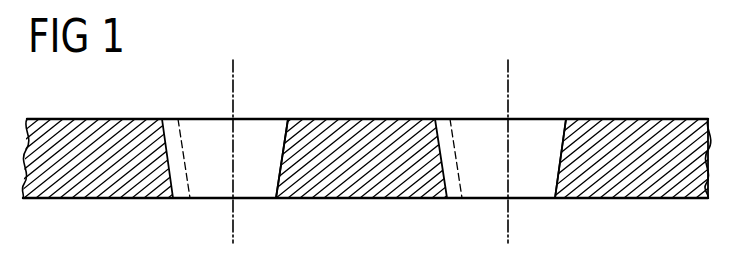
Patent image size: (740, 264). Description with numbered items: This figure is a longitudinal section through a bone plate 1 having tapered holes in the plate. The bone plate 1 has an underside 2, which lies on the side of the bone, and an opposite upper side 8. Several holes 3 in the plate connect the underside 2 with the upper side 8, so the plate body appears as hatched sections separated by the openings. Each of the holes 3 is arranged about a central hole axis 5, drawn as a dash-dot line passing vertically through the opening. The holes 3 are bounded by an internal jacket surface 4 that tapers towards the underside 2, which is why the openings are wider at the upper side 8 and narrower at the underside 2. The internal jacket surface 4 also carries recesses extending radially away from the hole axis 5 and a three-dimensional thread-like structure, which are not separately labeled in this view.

The bone plate 1 is at (370, 103).
The underside 2 is at (367, 187).
The holes in the plate 3 is at (208, 130).
The internal jacket surface 4 is at (284, 142).
The central hole axis 5 is at (233, 225).
The upper side 8 is at (643, 118).